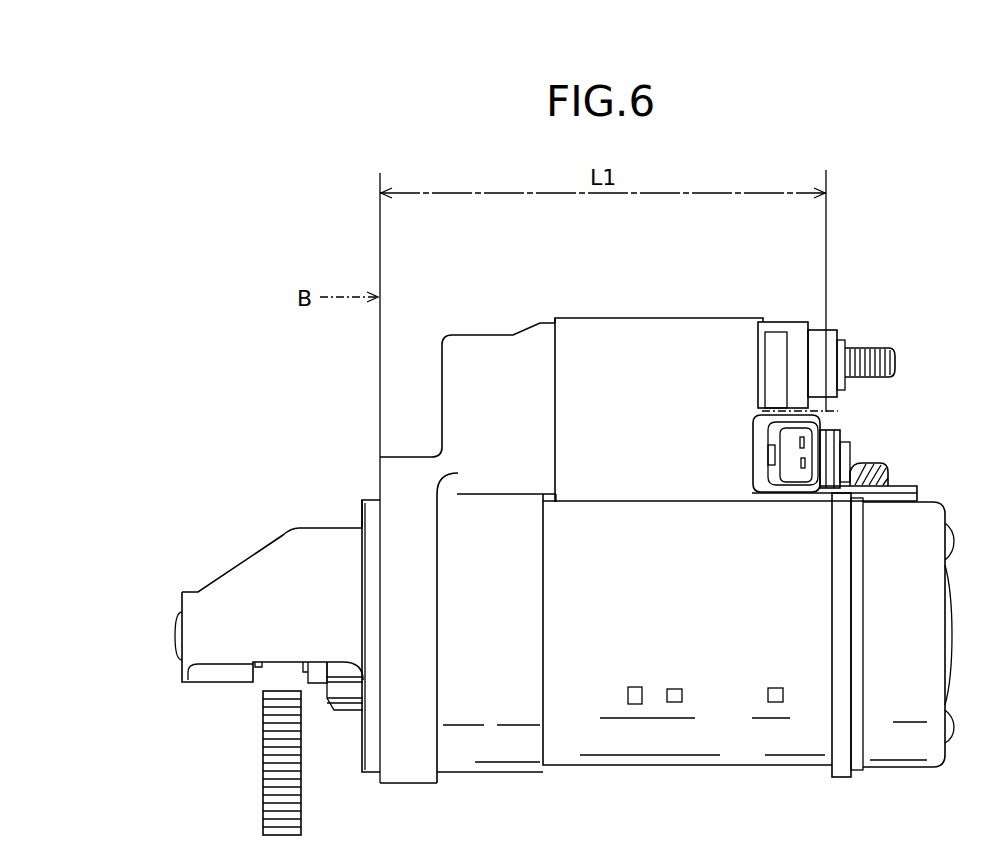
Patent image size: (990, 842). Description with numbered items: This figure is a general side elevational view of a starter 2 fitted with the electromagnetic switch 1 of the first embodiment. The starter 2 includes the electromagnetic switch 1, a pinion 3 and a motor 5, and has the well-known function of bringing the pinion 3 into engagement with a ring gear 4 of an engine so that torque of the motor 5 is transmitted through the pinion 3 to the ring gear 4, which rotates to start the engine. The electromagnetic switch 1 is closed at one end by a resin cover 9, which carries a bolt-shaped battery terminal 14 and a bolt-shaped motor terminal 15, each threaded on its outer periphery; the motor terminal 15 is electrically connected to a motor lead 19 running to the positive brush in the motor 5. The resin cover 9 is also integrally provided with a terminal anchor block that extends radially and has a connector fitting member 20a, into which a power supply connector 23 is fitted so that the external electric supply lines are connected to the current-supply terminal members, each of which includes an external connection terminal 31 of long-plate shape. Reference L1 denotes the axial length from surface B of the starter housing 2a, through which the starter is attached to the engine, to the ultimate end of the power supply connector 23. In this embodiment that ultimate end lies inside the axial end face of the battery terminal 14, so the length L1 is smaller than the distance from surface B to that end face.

The electromagnetic switch 1 is at (602, 313).
The starter 2 is at (338, 484).
The starter housing 2a is at (490, 723).
The pinion 3 is at (340, 692).
The ring gear 4 is at (263, 747).
The motor 5 is at (732, 717).
The resin cover 9 is at (795, 343).
The battery terminal 14 is at (895, 345).
The motor terminal 15 is at (850, 445).
The motor lead 19 is at (888, 470).
The connector fitting member 20a is at (840, 412).
The power supply connector 23 is at (752, 460).
The external connection terminal 31 is at (804, 468).